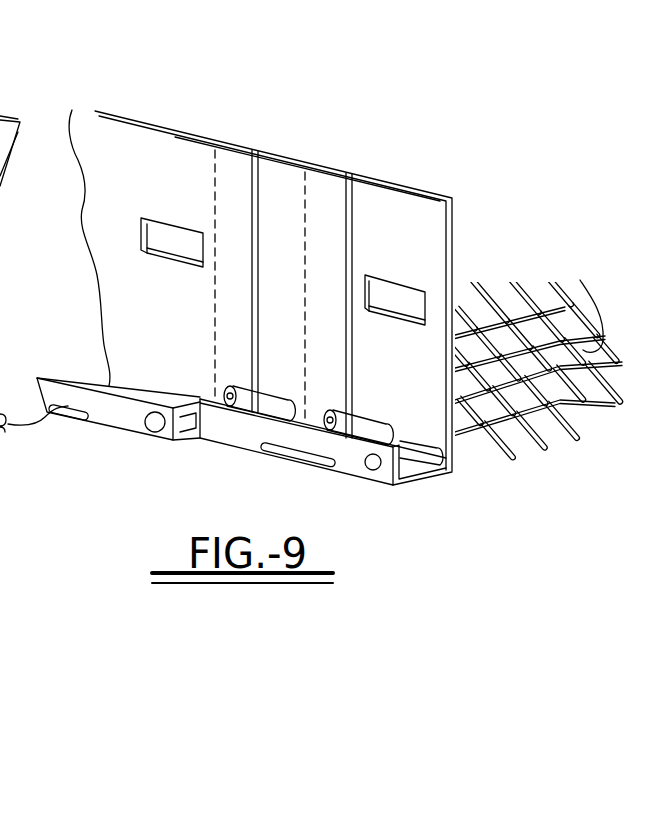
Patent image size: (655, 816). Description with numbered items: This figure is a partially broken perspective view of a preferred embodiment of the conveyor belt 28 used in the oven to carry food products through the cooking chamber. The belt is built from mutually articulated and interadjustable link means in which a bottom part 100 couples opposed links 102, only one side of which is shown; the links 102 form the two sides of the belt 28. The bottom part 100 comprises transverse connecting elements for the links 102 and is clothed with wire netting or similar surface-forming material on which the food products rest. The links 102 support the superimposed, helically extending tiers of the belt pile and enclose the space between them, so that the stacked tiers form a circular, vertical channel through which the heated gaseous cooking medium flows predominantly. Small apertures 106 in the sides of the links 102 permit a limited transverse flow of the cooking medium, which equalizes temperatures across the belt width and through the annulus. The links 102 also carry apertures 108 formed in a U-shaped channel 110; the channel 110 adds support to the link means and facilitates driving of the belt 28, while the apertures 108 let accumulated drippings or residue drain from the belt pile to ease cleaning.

The conveyor belt 28 is at (381, 135).
The bottom part 100 is at (556, 313).
The links 102 is at (377, 219).
The apertures 106 is at (148, 255).
The apertures 108 is at (297, 457).
The U-shaped channel 110 is at (420, 476).